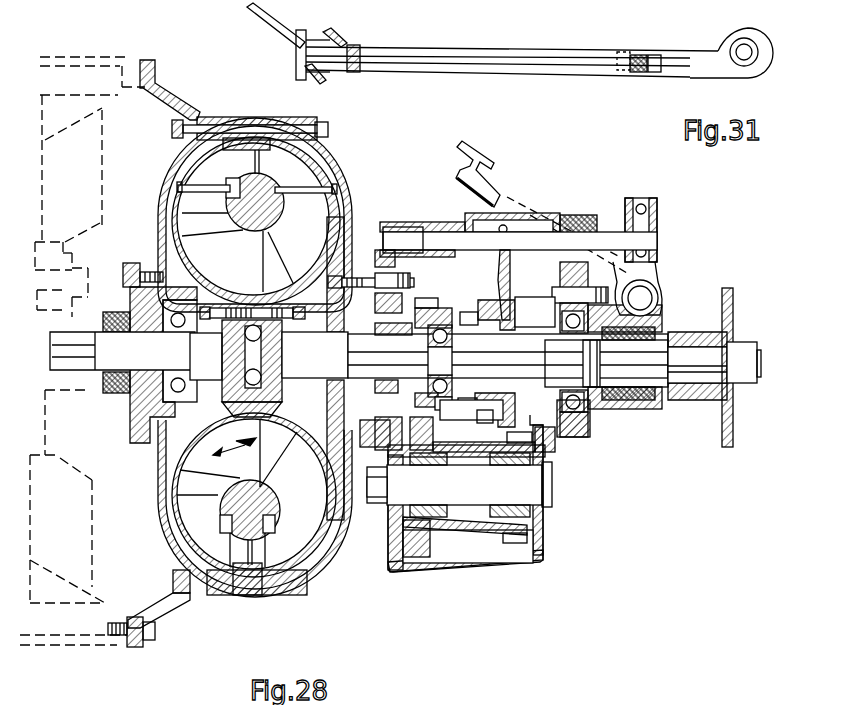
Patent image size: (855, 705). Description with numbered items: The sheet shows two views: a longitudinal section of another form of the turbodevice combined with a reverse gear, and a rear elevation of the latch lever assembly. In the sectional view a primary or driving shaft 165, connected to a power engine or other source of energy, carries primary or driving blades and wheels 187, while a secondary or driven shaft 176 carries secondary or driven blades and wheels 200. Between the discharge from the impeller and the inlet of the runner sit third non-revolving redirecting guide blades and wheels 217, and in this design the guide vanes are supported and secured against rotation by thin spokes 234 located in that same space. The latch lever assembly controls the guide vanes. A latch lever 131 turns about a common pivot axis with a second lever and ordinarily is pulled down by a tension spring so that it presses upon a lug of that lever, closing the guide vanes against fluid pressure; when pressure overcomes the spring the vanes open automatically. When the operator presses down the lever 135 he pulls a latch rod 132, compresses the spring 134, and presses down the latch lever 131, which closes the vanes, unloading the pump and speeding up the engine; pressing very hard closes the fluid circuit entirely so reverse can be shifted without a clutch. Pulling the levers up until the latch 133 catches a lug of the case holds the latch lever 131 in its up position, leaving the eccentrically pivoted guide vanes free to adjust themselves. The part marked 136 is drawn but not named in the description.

In FIG. 31, the latch lever 131 is at (393, 48).
In FIG. 31, the latch rod 132 is at (455, 60).
In FIG. 31, the latch 133 is at (653, 55).
In FIG. 31, the spring 134 is at (640, 54).
In FIG. 31, the lever 135 is at (326, 44).
In FIG. 31, the lever rod 136 is at (300, 48).
In FIG. 28, the primary or driving shaft 165 is at (122, 351).
In FIG. 28, the secondary or driven shaft 176 is at (315, 355).
In FIG. 28, the primary or driving blades and wheels 187 is at (257, 180).
In FIG. 28, the secondary or driven blades and wheels 200 is at (255, 215).
In FIG. 28, the third non-revolving redirecting guide blades and wheels 217 is at (212, 239).
In FIG. 28, the thin spokes 234 is at (222, 574).